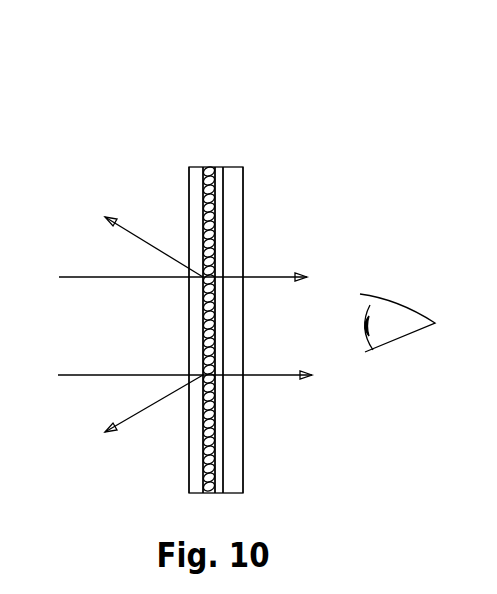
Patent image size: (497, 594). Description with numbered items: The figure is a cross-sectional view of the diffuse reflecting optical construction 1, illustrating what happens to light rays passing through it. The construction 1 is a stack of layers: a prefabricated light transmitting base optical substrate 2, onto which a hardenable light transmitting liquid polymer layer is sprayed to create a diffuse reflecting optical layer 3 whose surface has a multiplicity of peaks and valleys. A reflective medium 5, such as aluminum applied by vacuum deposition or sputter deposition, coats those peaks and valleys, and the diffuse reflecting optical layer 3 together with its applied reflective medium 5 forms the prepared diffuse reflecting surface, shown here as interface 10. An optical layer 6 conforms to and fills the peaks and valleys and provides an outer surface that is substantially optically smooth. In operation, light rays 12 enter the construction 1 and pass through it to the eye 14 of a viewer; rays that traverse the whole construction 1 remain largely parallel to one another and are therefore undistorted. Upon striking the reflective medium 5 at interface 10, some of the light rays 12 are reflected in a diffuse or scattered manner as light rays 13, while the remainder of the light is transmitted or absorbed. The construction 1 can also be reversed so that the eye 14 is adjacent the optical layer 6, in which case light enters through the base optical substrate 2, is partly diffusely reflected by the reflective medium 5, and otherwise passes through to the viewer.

The diffuse reflecting optical construction 1 is at (143, 110).
The base optical substrate 2 is at (235, 168).
The diffuse reflecting optical layer 3 is at (219, 168).
The reflective medium 5 is at (209, 168).
The optical layer 6 is at (197, 168).
The prepared diffuse reflecting surface 10 is at (170, 299).
The light rays 12 is at (77, 275).
The light rays 13 is at (140, 238).
The eye 14 is at (398, 345).